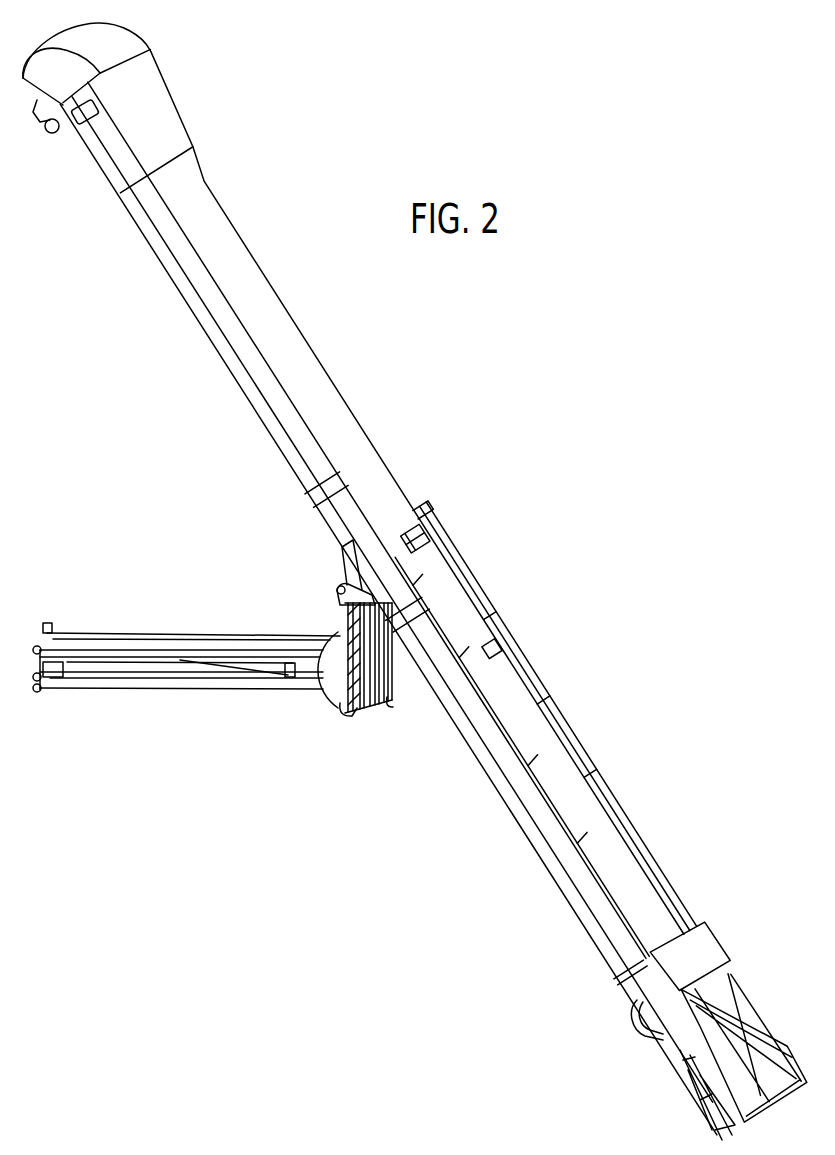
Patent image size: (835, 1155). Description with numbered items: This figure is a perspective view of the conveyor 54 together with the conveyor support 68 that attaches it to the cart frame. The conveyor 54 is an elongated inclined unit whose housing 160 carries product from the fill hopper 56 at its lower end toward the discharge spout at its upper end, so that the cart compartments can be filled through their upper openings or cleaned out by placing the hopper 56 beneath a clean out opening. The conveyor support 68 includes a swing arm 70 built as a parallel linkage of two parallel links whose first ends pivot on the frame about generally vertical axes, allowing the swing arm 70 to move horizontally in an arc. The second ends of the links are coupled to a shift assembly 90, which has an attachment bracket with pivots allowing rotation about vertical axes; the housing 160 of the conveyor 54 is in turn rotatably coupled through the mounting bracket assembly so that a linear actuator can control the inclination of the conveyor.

The conveyor 54 is at (350, 420).
The fill hopper 56 is at (768, 1003).
The conveyor support 68 is at (268, 582).
The swing arm 70 is at (256, 703).
The shift assembly 90 is at (408, 683).
The housing 160 is at (465, 737).